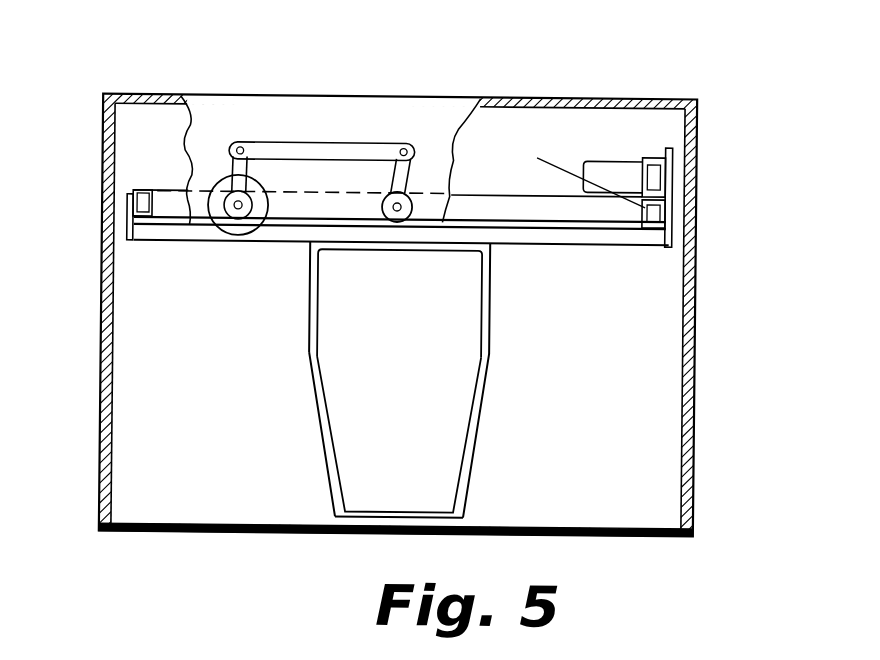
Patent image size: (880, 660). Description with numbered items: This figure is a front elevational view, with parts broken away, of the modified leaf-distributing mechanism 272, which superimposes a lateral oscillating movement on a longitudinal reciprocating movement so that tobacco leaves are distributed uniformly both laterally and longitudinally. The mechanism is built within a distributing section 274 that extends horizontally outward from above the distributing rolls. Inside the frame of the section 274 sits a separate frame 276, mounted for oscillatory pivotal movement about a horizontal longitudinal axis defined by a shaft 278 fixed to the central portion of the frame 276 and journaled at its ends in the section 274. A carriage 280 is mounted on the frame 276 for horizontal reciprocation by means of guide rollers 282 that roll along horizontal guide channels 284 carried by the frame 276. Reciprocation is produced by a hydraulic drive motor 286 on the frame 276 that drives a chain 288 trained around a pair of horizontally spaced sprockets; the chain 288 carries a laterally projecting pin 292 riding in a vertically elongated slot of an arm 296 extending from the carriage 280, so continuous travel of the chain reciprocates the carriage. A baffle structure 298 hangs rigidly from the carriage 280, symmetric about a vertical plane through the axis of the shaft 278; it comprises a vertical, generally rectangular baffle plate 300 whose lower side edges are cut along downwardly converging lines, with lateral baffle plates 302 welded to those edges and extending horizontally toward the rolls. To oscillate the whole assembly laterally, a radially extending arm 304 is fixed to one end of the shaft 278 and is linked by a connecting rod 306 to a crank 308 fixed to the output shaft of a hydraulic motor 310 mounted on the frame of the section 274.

The leaf-distributing mechanism 272 is at (762, 54).
The distributing section 274 is at (444, 62).
The frame 276 is at (134, 242).
The shaft 278 is at (381, 208).
The carriage 280 is at (203, 234).
The guide rollers 282 is at (127, 200).
The guide channels 284 is at (162, 192).
The hydraulic drive motor 286 is at (623, 138).
The chain 288 is at (656, 155).
The pin 292 is at (664, 160).
The arm 296 is at (664, 174).
The baffle structure 298 is at (500, 352).
The baffle plate 300 is at (448, 414).
The lateral baffle plates 302 is at (324, 461).
The arm 304 is at (391, 178).
The connecting rod 306 is at (355, 120).
The crank 308 is at (228, 167).
The hydraulic motor 310 is at (255, 191).